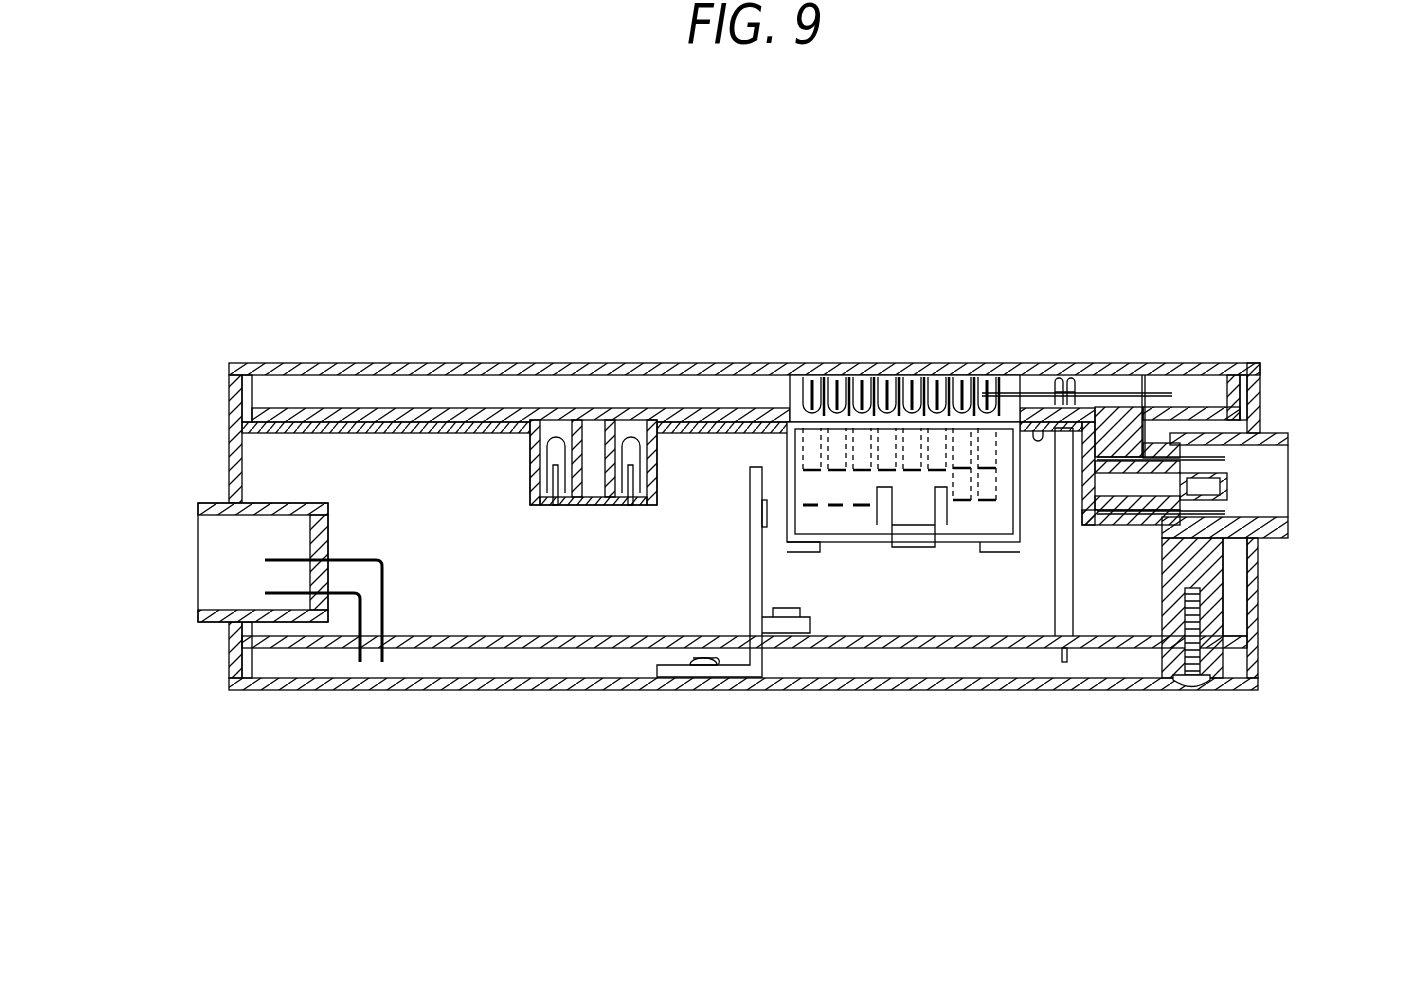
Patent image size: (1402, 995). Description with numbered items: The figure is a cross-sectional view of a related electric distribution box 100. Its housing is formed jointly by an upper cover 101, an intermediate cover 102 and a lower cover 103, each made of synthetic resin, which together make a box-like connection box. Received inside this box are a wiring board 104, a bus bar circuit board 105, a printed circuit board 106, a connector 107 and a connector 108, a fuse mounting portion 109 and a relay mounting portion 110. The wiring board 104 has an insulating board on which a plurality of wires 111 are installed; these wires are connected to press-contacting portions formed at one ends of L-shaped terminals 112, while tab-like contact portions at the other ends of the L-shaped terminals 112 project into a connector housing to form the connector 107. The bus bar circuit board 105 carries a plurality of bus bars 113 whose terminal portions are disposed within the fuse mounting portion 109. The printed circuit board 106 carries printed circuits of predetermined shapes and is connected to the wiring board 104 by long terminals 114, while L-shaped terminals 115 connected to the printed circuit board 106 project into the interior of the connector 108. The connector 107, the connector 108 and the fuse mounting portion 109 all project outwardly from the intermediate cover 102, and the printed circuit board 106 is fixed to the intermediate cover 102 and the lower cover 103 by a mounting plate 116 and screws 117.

The electric distribution box 100 is at (857, 291).
The upper cover 101 is at (1183, 364).
The intermediate cover 102 is at (1262, 545).
The lower cover 103 is at (927, 690).
The wiring board 104 is at (455, 408).
The bus bar circuit board 105 is at (1040, 410).
The printed circuit board 106 is at (1048, 648).
The connector 107 is at (945, 551).
The connector 108 is at (205, 588).
The fuse mounting portion 109 is at (1290, 467).
The relay mounting portion 110 is at (590, 505).
The wires 111 is at (1128, 385).
The L-shaped terminals 112 is at (768, 412).
The bus bars 113 is at (1096, 528).
The long terminals 114 is at (1063, 608).
The L-shaped terminals 115 is at (360, 557).
The mounting plate 116 is at (752, 567).
The screws 117 is at (685, 658).